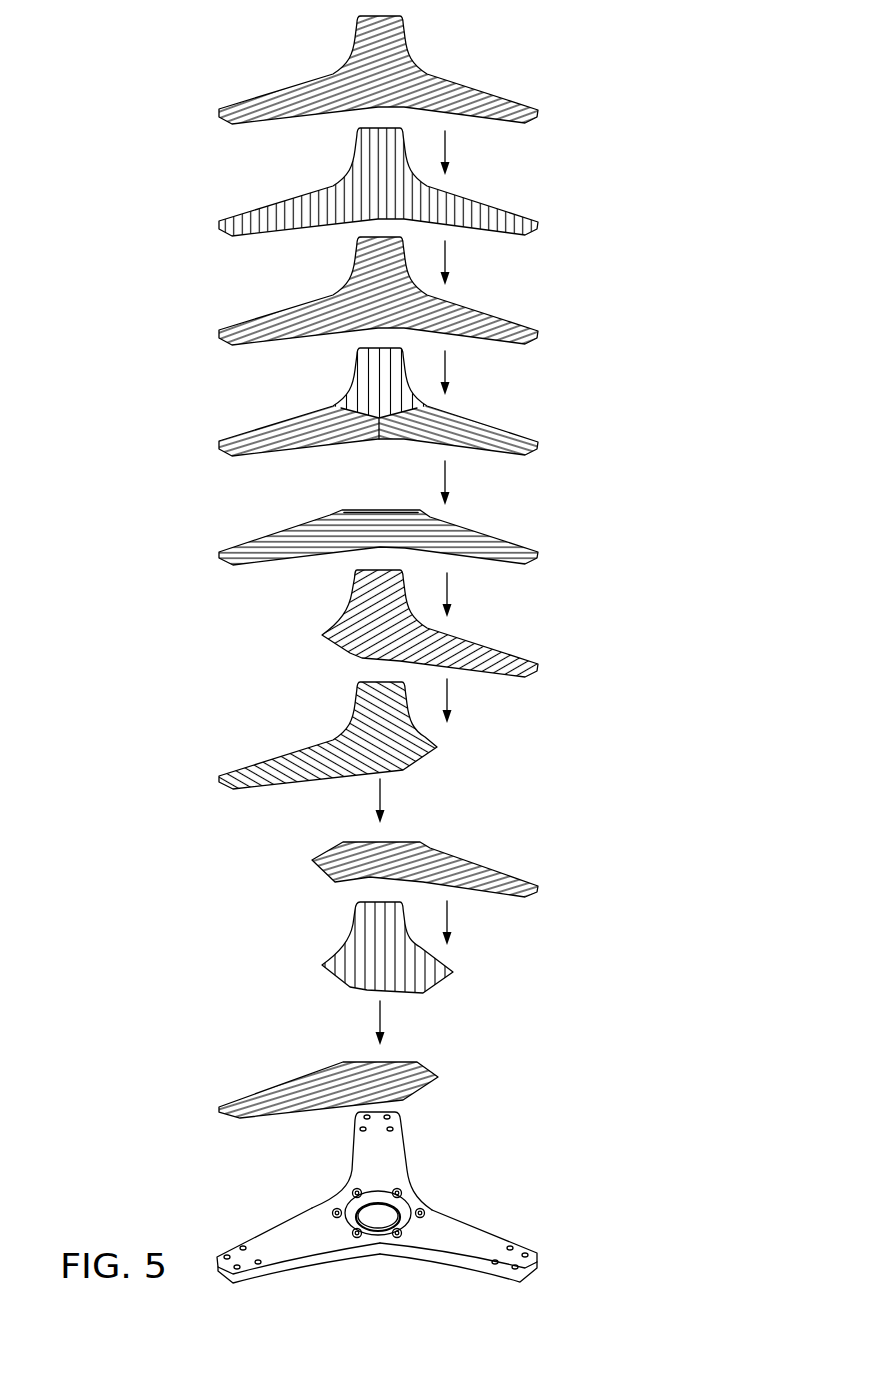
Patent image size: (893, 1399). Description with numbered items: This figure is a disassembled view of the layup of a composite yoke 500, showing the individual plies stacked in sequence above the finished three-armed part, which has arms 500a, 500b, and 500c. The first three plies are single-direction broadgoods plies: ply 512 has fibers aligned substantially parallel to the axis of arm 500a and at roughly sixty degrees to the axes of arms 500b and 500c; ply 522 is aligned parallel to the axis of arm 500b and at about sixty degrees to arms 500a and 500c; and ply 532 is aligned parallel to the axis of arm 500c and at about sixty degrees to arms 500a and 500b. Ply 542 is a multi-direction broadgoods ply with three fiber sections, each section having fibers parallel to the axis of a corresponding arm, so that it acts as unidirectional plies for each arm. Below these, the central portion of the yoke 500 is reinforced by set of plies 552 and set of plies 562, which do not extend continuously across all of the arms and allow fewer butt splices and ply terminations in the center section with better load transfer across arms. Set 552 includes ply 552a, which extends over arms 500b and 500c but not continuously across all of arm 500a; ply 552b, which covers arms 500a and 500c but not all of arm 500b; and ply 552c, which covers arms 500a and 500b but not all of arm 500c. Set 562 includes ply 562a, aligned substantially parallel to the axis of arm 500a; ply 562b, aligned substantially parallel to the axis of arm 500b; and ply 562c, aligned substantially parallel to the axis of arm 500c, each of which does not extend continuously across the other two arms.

The yoke 500 is at (110, 60).
The arm 500a is at (507, 1213).
The arm 500b is at (400, 1130).
The arm 500c is at (267, 1233).
The ply 512 is at (267, 98).
The ply 522 is at (267, 210).
The ply 532 is at (267, 320).
The ply 542 is at (267, 430).
The set of plies 552 is at (203, 510).
The ply 552a is at (267, 758).
The ply 552b is at (265, 540).
The ply 552c is at (515, 627).
The set of plies 562 is at (203, 842).
The ply 562a is at (515, 848).
The ply 562b is at (332, 960).
The ply 562c is at (267, 1093).